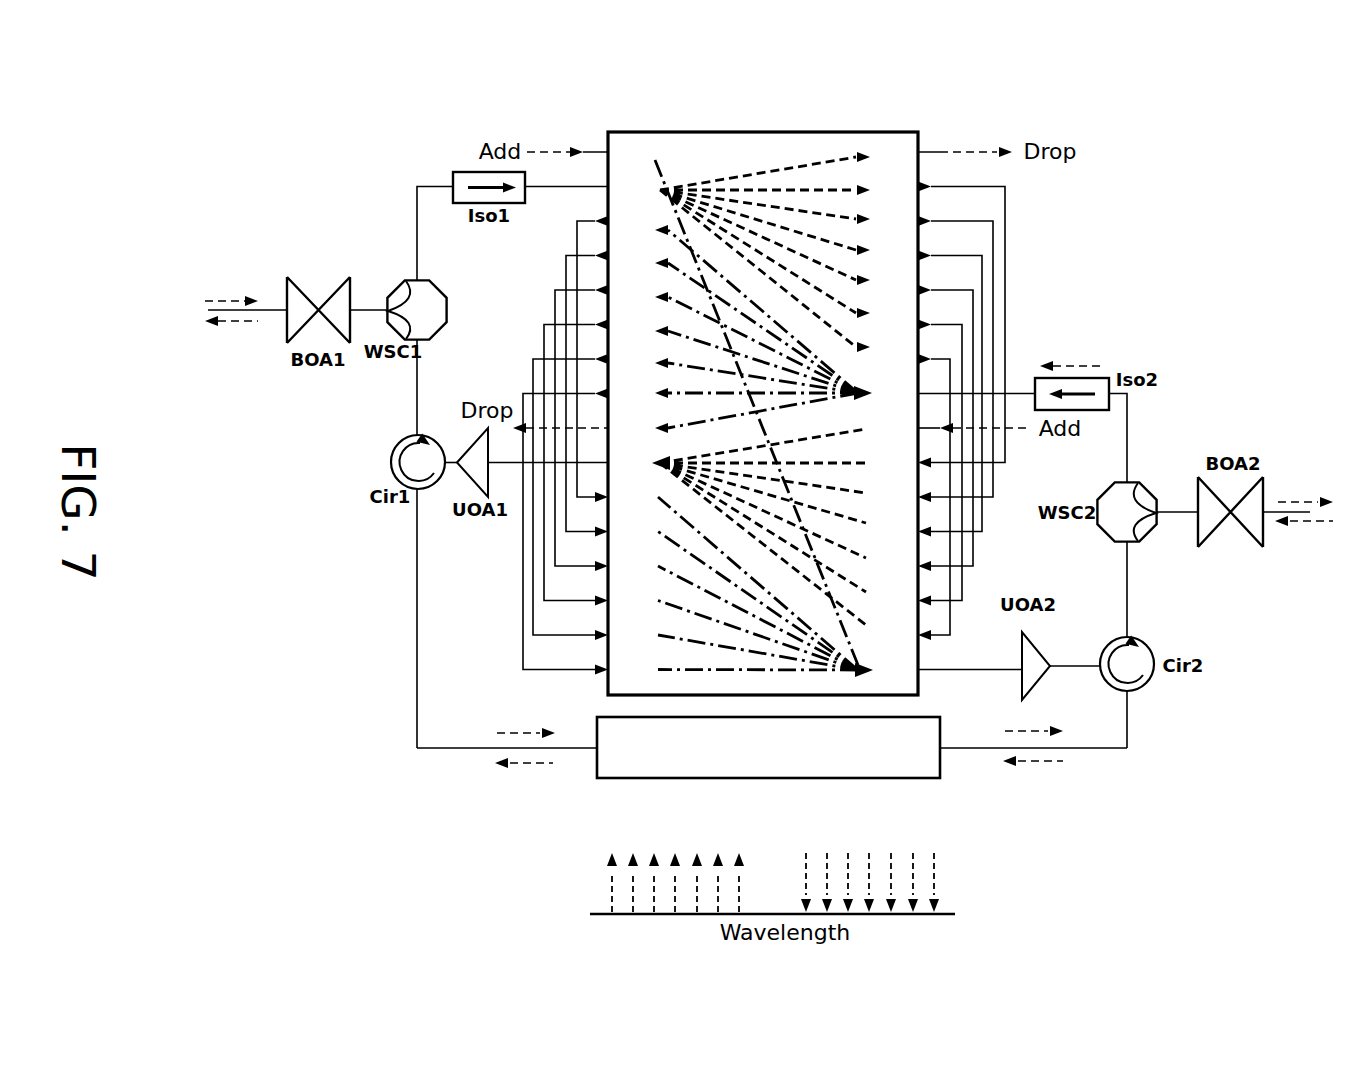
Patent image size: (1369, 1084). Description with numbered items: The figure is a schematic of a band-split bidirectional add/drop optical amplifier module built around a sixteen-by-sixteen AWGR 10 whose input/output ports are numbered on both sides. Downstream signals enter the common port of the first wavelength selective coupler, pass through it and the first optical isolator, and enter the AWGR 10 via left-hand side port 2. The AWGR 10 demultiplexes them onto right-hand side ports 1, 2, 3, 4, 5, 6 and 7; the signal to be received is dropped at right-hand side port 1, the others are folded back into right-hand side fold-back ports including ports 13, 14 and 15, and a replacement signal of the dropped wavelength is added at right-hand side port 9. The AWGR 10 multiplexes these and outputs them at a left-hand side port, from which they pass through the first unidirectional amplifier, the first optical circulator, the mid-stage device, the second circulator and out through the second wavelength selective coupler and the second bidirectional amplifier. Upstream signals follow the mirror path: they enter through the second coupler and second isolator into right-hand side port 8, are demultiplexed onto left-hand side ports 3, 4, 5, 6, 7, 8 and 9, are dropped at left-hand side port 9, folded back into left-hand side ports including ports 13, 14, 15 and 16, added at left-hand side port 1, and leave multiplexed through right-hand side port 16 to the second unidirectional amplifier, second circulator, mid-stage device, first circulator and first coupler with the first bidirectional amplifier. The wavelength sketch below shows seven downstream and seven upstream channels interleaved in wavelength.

The 16×16 AWGR 10 is at (768, 131).
The port 1 is at (791, 152).
The port 2 is at (728, 187).
The port 3 is at (763, 221).
The port 4 is at (763, 256).
The port 5 is at (763, 290).
The port 6 is at (763, 325).
The port 7 is at (763, 359).
The port 8 is at (815, 394).
The port 9 is at (733, 428).
The port 13 is at (763, 566).
The port 14 is at (763, 601).
The port 15 is at (763, 635).
The port 16 is at (808, 670).